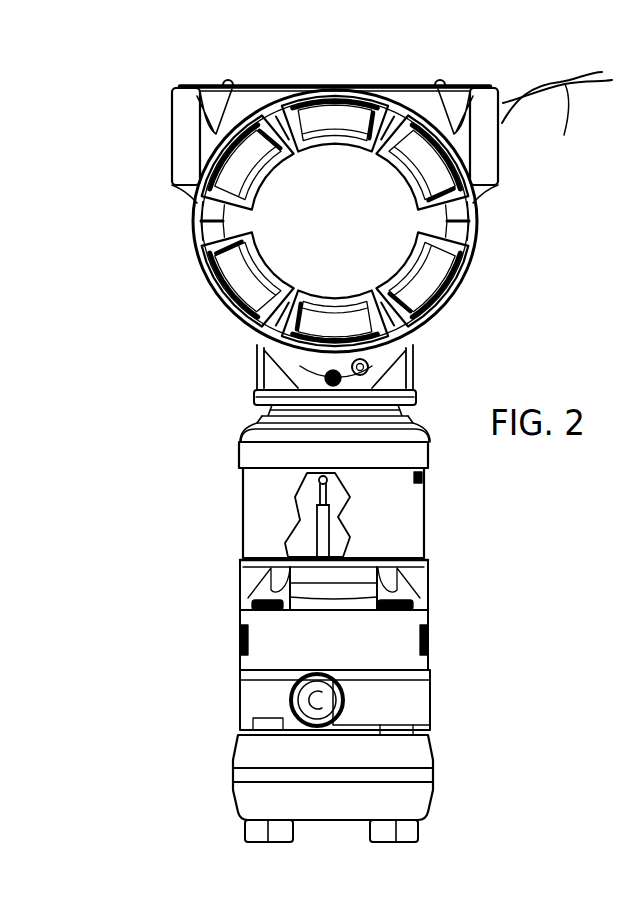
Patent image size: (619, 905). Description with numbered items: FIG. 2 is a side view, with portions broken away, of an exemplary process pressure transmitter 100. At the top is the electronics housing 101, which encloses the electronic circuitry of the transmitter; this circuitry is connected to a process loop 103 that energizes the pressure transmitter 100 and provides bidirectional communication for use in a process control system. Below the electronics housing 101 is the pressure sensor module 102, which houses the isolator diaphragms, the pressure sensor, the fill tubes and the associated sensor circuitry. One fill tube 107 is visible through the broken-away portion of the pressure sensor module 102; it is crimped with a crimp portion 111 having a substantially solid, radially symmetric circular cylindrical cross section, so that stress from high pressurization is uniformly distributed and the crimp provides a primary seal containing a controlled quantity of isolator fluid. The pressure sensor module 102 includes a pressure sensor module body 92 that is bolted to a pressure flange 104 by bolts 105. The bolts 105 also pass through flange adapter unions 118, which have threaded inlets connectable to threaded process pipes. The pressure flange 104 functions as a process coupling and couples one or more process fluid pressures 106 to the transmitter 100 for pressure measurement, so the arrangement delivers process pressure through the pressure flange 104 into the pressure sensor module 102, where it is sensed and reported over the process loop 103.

The pressure transmitter 100 is at (88, 33).
The electronics housing 101 is at (360, 256).
The pressure sensor module 102 is at (200, 609).
The process loop 103 is at (557, 127).
The pressure flange 104 is at (413, 714).
The bolts 105 is at (262, 602).
The process fluid pressure 106 is at (327, 690).
The fill tube 107 is at (318, 532).
The crimp portion 111 is at (325, 490).
The pressure sensor module body 92 is at (343, 652).
The flange adapter union 118 is at (383, 814).